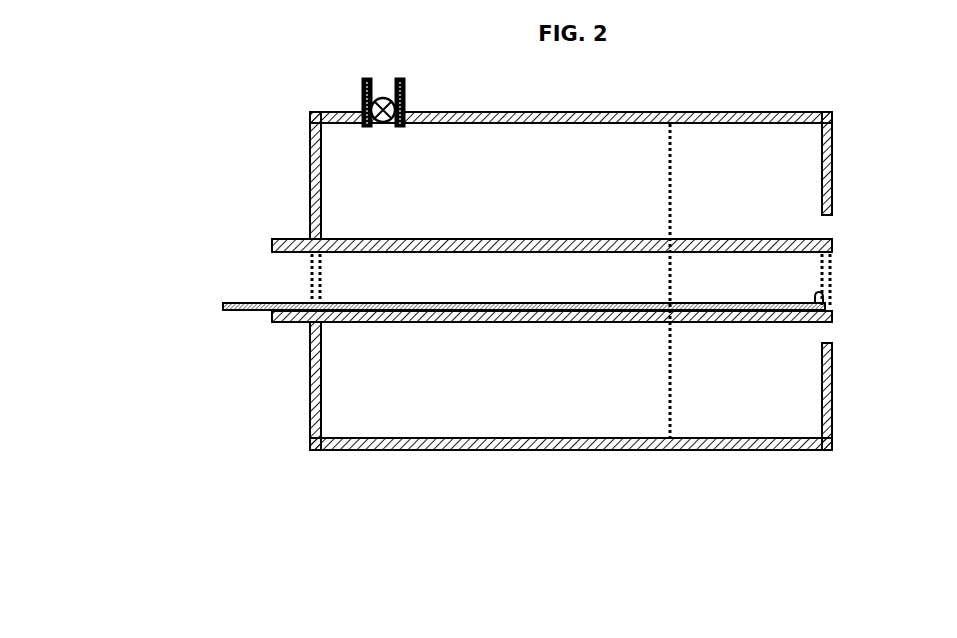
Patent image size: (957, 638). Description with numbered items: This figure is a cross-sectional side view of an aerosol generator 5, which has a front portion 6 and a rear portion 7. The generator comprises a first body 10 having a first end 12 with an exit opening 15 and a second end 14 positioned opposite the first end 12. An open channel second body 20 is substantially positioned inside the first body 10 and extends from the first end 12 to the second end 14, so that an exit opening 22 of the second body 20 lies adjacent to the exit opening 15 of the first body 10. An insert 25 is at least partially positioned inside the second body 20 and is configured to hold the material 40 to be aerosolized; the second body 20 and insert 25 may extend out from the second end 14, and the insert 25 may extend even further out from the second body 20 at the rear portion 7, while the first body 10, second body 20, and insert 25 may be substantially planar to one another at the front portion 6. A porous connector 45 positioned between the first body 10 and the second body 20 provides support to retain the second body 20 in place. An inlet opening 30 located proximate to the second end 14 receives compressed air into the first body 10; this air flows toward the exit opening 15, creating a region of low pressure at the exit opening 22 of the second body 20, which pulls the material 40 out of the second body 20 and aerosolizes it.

The aerosol generator 5 is at (206, 109).
The front portion 6 is at (843, 403).
The rear portion 7 is at (281, 193).
The first body 10 is at (649, 108).
The first end 12 is at (833, 150).
The second end 14 is at (309, 147).
The exit opening 15 is at (822, 228).
The second body 20 is at (272, 241).
The exit opening 22 is at (840, 263).
The insert 25 is at (225, 309).
The inlet opening 30 is at (410, 88).
The material 40 is at (826, 298).
The porous connector 45 is at (671, 142).